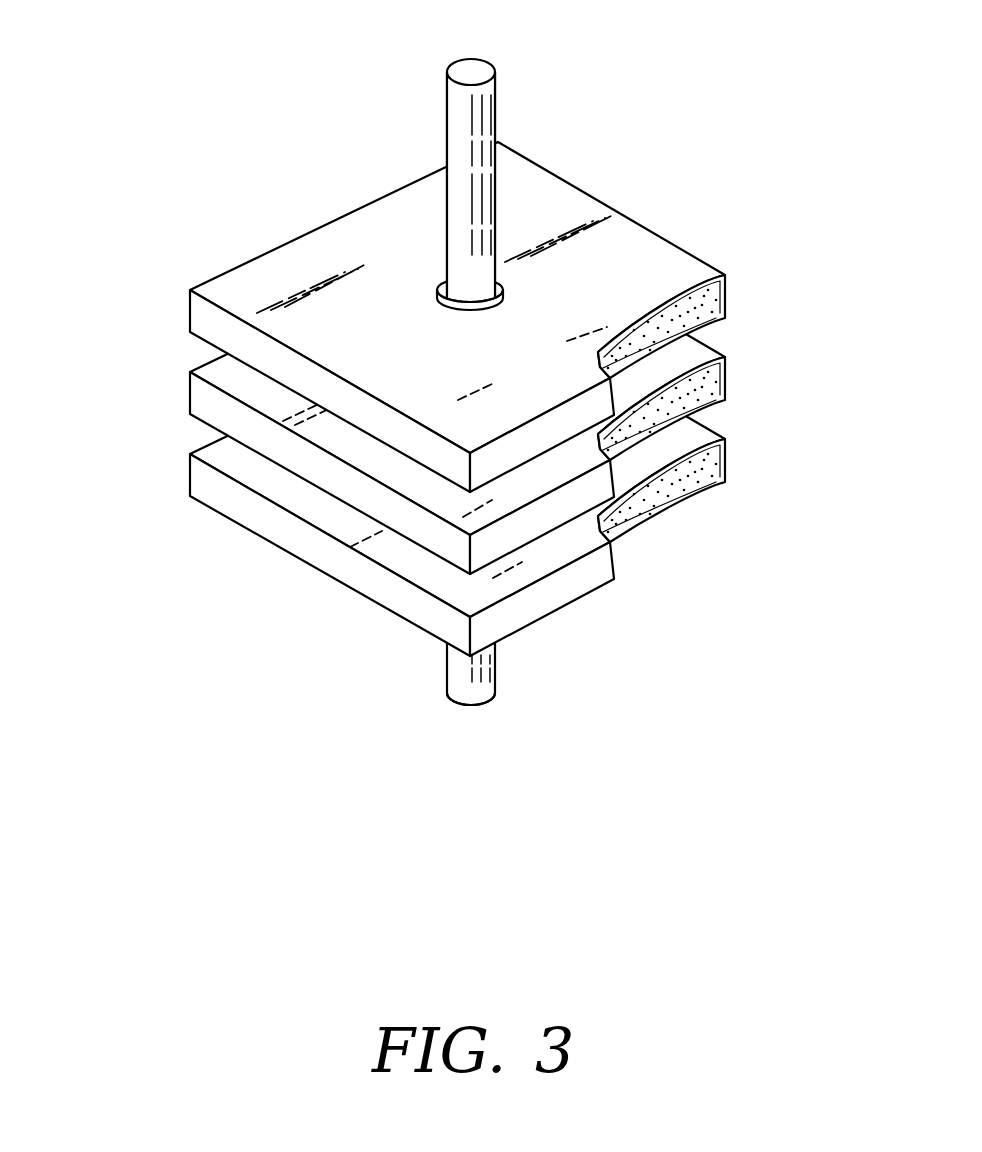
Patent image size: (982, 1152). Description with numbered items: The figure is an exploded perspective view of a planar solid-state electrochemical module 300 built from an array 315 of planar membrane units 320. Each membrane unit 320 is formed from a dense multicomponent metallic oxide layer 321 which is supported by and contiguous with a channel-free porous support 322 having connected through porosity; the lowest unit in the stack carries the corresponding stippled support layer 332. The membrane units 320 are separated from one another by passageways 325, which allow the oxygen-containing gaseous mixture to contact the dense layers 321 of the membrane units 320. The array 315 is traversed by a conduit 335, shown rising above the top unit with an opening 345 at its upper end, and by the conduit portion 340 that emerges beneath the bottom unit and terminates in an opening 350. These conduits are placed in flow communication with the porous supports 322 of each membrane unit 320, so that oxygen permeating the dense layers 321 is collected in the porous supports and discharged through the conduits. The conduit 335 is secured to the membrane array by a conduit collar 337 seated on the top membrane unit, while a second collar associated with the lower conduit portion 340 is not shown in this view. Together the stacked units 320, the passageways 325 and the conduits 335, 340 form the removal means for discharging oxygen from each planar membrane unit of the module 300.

The planar solid-state electrochemical module 300 is at (456, 381).
The array of membrane units 315 is at (528, 160).
The membrane unit 320 is at (456, 390).
The dense multicomponent metallic oxide layer 321 is at (727, 282).
The channel-free porous support 322 is at (720, 310).
The edge core layer of lower plate 332 is at (700, 469).
The passageway 325 is at (400, 632).
The conduit 335 is at (448, 151).
The conduit collar 337 is at (437, 293).
The lower rod portion 340 is at (463, 675).
The opening 345 is at (475, 70).
The opening 350 is at (467, 707).